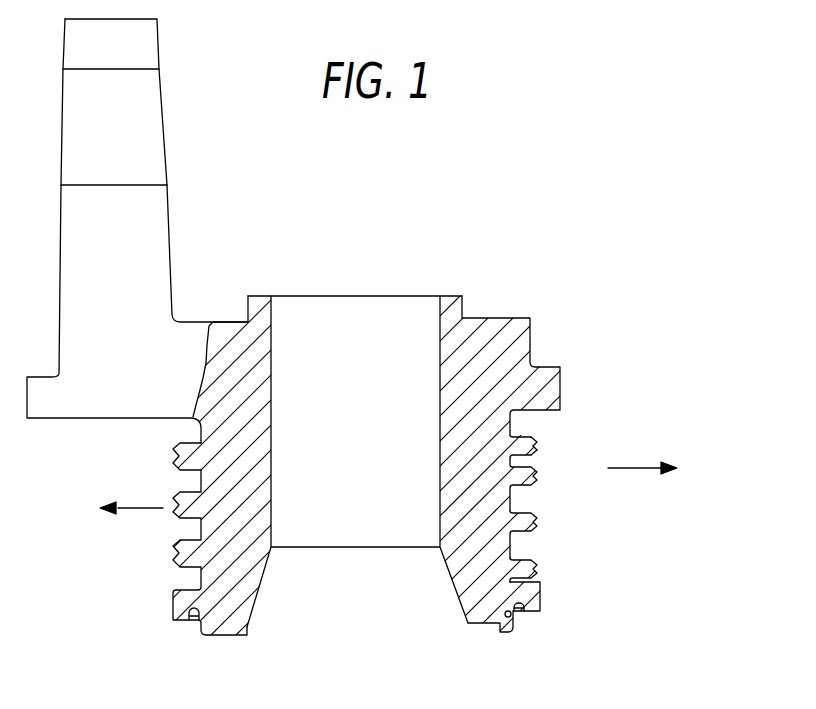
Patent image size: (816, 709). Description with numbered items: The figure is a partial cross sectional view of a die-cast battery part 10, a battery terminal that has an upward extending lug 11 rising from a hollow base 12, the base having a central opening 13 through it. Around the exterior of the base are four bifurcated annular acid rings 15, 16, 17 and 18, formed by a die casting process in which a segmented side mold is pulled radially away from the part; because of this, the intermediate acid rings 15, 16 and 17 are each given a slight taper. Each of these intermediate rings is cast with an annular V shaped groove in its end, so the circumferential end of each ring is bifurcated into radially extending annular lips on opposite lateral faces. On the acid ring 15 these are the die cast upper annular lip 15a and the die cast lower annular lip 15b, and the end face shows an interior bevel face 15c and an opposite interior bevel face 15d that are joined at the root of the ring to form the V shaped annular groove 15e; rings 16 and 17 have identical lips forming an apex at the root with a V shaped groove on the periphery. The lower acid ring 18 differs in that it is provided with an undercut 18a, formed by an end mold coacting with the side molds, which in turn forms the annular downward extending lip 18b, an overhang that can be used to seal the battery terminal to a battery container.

The battery part 10 is at (442, 237).
The upward extending lug 11 is at (168, 227).
The hollow base 12 is at (468, 330).
The central opening 13 is at (322, 325).
The bifurcated acid ring 15 is at (614, 421).
The upper annular lip 15a is at (530, 437).
The lower annular lip 15b is at (538, 463).
The bevel face 15c is at (533, 447).
The lower crest lobe 15d is at (535, 455).
The V shaped annular groove 15e is at (533, 450).
The bifurcated acid ring 16 is at (537, 518).
The bifurcated acid ring 17 is at (540, 566).
The lower acid ring 18 is at (541, 594).
The undercut 18a is at (513, 622).
The downward extending lip 18b is at (541, 611).